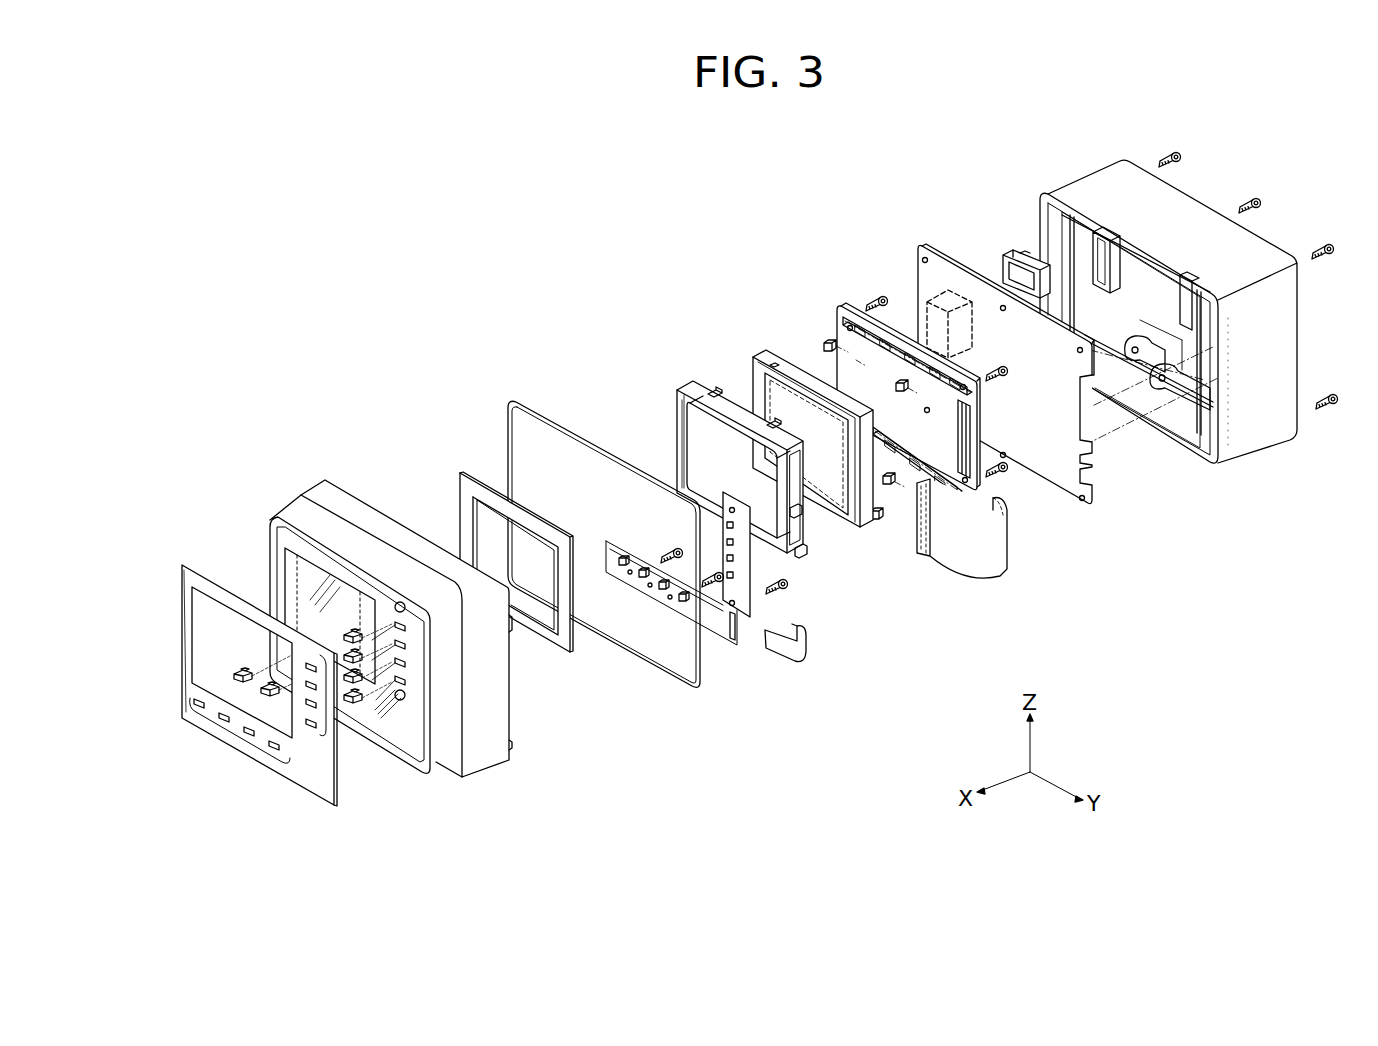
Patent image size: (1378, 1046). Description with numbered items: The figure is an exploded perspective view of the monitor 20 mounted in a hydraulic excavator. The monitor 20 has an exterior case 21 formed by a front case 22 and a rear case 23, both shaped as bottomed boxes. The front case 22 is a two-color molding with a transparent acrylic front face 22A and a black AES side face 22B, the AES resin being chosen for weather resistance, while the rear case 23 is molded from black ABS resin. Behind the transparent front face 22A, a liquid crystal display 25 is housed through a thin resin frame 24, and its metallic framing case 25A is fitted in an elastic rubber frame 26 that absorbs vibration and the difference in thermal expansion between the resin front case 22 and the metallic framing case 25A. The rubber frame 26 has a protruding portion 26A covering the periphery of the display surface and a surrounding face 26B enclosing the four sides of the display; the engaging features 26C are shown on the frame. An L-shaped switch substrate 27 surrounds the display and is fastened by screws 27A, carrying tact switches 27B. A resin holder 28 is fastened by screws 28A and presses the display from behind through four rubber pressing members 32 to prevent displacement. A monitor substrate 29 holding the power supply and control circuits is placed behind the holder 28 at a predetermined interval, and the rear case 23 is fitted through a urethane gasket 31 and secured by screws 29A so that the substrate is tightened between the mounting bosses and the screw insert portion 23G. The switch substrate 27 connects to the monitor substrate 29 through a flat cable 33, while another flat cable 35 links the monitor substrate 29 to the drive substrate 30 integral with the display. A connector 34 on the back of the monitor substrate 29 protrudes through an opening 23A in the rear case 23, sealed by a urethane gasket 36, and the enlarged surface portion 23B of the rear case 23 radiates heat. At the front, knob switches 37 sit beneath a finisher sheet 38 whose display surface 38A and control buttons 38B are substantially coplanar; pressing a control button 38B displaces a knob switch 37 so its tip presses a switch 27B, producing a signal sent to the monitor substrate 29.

The monitor 20 is at (627, 218).
The exterior case 21 is at (303, 463).
The front case 22 is at (347, 500).
The front face 22A is at (285, 573).
The side face 22B is at (385, 528).
The rear case 23 is at (1087, 183).
The opening 23A is at (1113, 250).
The surface portion 23B is at (1267, 427).
The screw insert portion 23G is at (1153, 400).
The resin frame 24 is at (448, 480).
The liquid crystal display 25 is at (763, 352).
The framing case 25A is at (835, 400).
The rubber frame 26 is at (690, 388).
The protruding portion 26A is at (723, 417).
The surrounding face 26B is at (800, 513).
The engaging claw 26C is at (715, 395).
The switch substrate 27 is at (717, 625).
The screw 27A is at (677, 547).
The switch 27B is at (623, 570).
The holder 28 is at (847, 302).
The screw 28A is at (882, 293).
The monitor substrate 29 is at (922, 248).
The screw 29A is at (1181, 158).
The drive substrate 30 is at (748, 387).
The gasket 31 is at (516, 402).
The pressing member 32 is at (823, 343).
The flat cable 33 is at (808, 647).
The connector 34 is at (945, 296).
The flat cable 35 is at (997, 540).
The gasket 36 is at (1013, 253).
The knob switch 37 is at (238, 675).
The finisher sheet 38 is at (185, 565).
The display surface 38A is at (198, 602).
The control button 38B is at (232, 723).